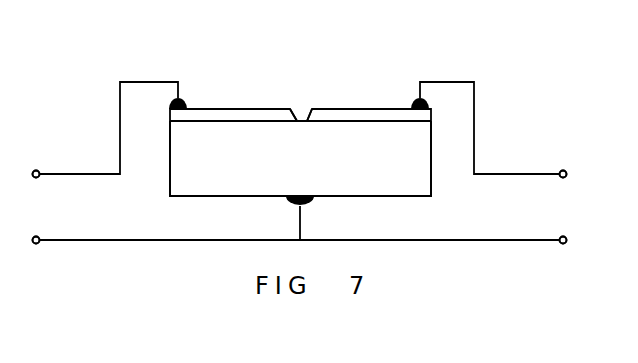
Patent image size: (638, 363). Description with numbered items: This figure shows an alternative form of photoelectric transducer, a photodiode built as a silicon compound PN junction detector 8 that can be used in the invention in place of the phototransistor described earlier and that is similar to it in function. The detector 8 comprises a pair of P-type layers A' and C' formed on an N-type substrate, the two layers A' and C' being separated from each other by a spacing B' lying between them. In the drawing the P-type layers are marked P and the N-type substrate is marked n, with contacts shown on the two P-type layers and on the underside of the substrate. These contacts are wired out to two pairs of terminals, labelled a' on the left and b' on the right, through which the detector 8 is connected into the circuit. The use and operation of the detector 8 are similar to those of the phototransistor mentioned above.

The silicon compound PN junction detector 8 is at (353, 142).
The first terminal pair a' is at (37, 207).
The second terminal pair b' is at (565, 207).
The p-type regions P is at (300, 115).
The n-type body region n is at (300, 158).
The P-type layer A' is at (230, 100).
The spacing B' is at (301, 106).
The P-type layer C' is at (371, 100).